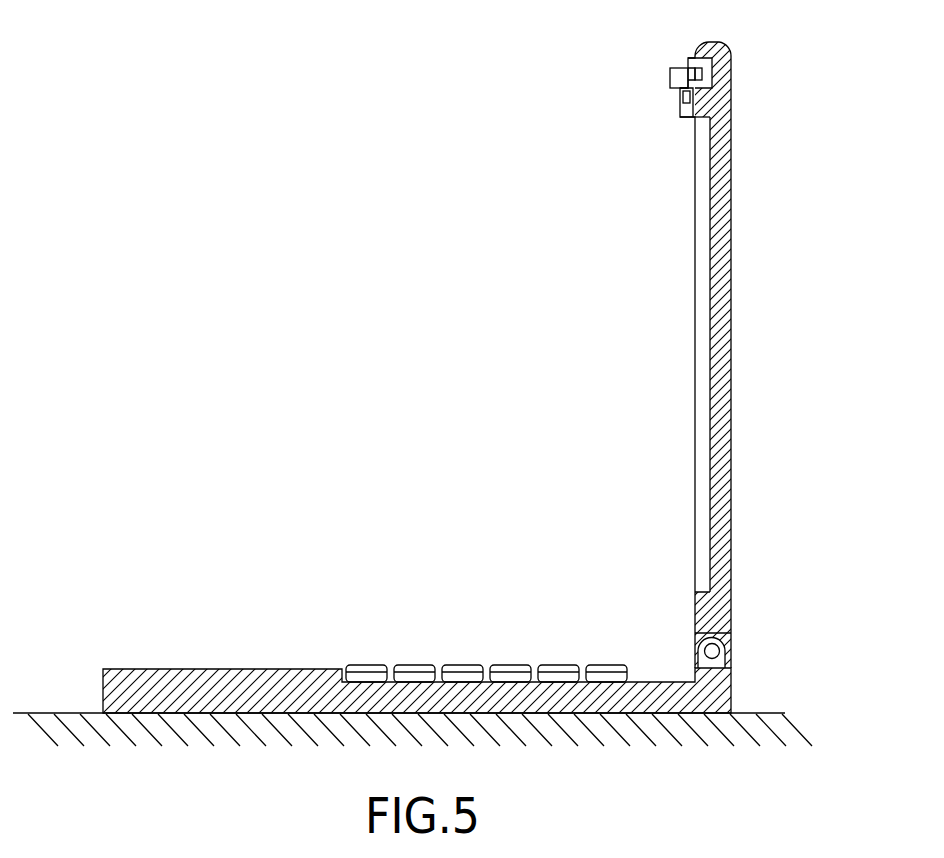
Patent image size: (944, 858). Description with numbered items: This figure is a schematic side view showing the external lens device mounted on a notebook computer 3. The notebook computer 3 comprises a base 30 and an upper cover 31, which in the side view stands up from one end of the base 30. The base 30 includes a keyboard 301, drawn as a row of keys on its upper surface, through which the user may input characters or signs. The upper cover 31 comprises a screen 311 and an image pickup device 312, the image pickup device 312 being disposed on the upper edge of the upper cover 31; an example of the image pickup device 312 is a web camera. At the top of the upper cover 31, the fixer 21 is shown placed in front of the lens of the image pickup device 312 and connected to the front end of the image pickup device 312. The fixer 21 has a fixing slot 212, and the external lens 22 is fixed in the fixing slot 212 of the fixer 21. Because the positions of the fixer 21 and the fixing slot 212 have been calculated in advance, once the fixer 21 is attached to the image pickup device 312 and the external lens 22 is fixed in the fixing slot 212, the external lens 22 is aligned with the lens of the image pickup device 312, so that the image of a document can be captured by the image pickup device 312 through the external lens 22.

The notebook computer 3 is at (752, 265).
The base 30 is at (741, 697).
The keyboard 301 is at (412, 662).
The upper cover 31 is at (731, 374).
The screen 311 is at (705, 383).
The image pickup device 312 is at (706, 66).
The fixer 21 is at (679, 116).
The external lens 22 is at (678, 65).
The fixing slot 212 is at (706, 88).